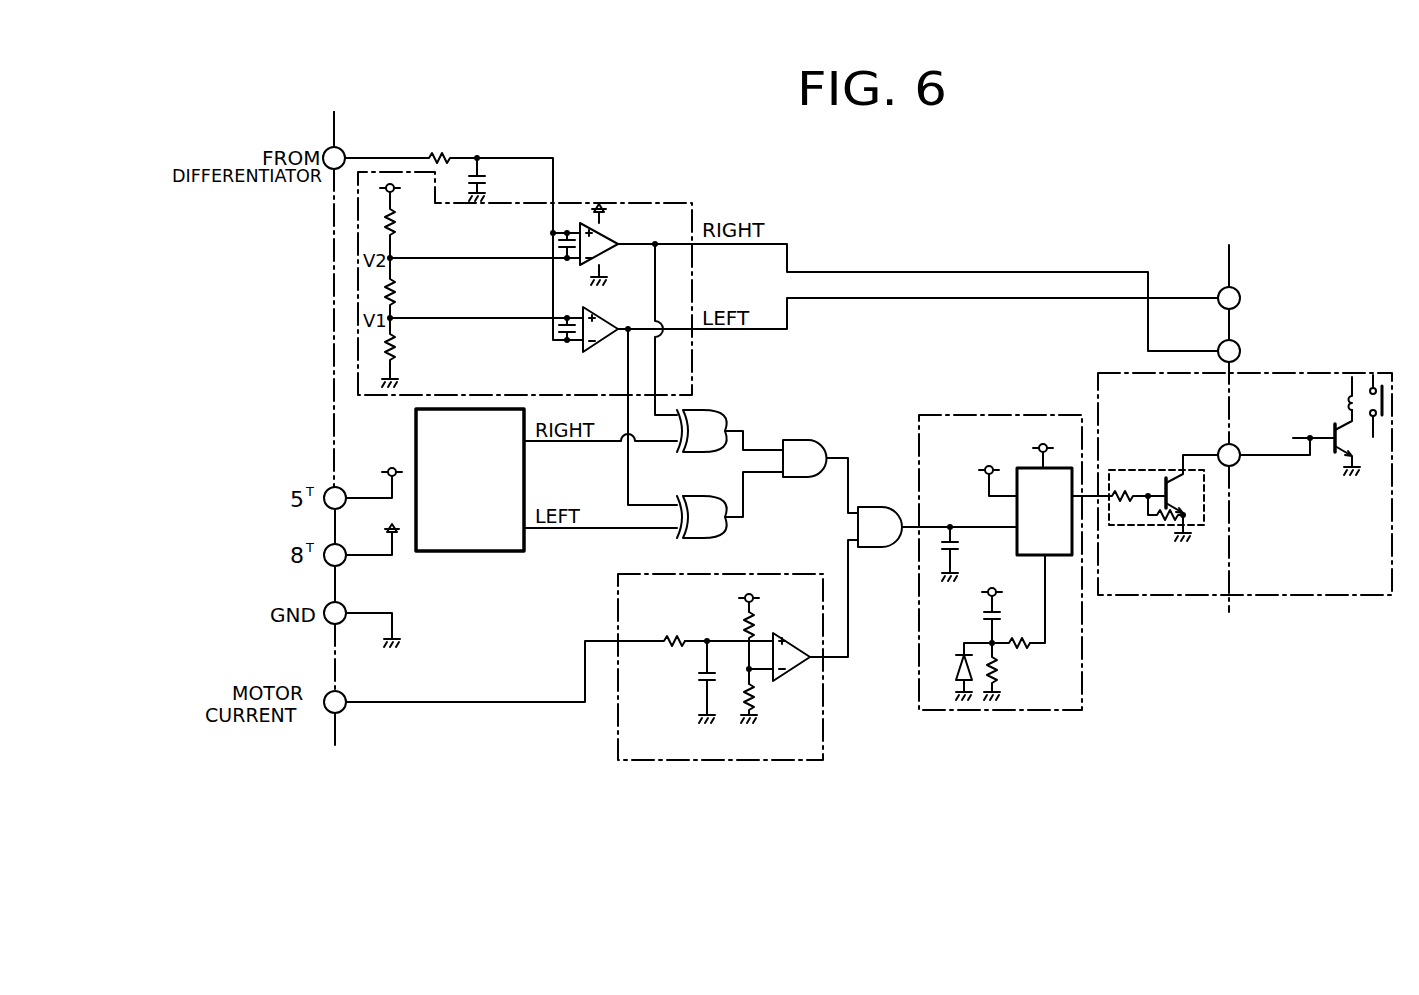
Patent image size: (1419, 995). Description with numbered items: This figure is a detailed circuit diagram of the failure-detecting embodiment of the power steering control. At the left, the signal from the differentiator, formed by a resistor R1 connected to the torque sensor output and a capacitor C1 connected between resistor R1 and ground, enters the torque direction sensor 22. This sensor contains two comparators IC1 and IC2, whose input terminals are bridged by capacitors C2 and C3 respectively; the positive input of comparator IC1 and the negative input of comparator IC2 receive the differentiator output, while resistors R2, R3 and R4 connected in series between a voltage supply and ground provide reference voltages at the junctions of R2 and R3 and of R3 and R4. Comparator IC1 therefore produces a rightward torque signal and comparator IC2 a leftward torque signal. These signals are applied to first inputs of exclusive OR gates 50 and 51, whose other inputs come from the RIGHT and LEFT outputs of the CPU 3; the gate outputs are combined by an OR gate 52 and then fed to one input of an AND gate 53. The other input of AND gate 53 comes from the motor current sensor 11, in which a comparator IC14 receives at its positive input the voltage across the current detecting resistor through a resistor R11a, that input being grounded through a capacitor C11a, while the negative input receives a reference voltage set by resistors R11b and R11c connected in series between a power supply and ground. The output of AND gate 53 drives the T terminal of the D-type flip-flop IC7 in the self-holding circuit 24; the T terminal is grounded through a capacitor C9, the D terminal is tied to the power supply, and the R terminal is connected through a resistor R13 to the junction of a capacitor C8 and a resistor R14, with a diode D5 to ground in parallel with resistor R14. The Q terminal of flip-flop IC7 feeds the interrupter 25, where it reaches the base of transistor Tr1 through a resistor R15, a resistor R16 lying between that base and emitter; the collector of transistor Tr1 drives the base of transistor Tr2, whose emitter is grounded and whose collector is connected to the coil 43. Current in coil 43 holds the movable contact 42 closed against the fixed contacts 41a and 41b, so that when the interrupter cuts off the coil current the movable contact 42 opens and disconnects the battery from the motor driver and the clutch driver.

The torque direction sensor 22 is at (628, 203).
The CPU 3 is at (470, 552).
The exclusive OR gate 50 is at (710, 412).
The exclusive OR gate 51 is at (690, 500).
The OR gate 52 is at (793, 440).
The AND gate 53 is at (875, 505).
The motor current sensor 11 is at (723, 762).
The self-holding circuit 24 is at (1000, 415).
The interrupter 25 is at (1170, 597).
The movable contact 42 is at (1393, 375).
The fixed contact 41a is at (1374, 423).
The fixed contact 41b is at (1382, 386).
The coil 43 is at (1346, 405).
The resistor R1 is at (440, 144).
The capacitor C1 is at (494, 179).
The resistor R2 is at (407, 222).
The resistor R3 is at (407, 292).
The resistor R4 is at (407, 347).
The capacitor C2 is at (552, 231).
The capacitor C3 is at (552, 312).
The comparator IC1 is at (610, 244).
The comparator IC2 is at (611, 326).
The resistor R11a is at (680, 629).
The resistor R11b is at (775, 625).
The resistor R11c is at (754, 697).
The capacitor C11a is at (681, 695).
The comparator IC14 is at (786, 674).
The capacitor C9 is at (965, 554).
The capacitor C8 is at (980, 614).
The resistor R13 is at (1022, 633).
The resistor R14 is at (1011, 677).
The diode D5 is at (957, 670).
The D-type flip-flop IC7 is at (1058, 558).
The resistor R15 is at (1126, 487).
The resistor R16 is at (1172, 517).
The transistor Tr1 is at (1185, 500).
The transistor Tr2 is at (1342, 450).